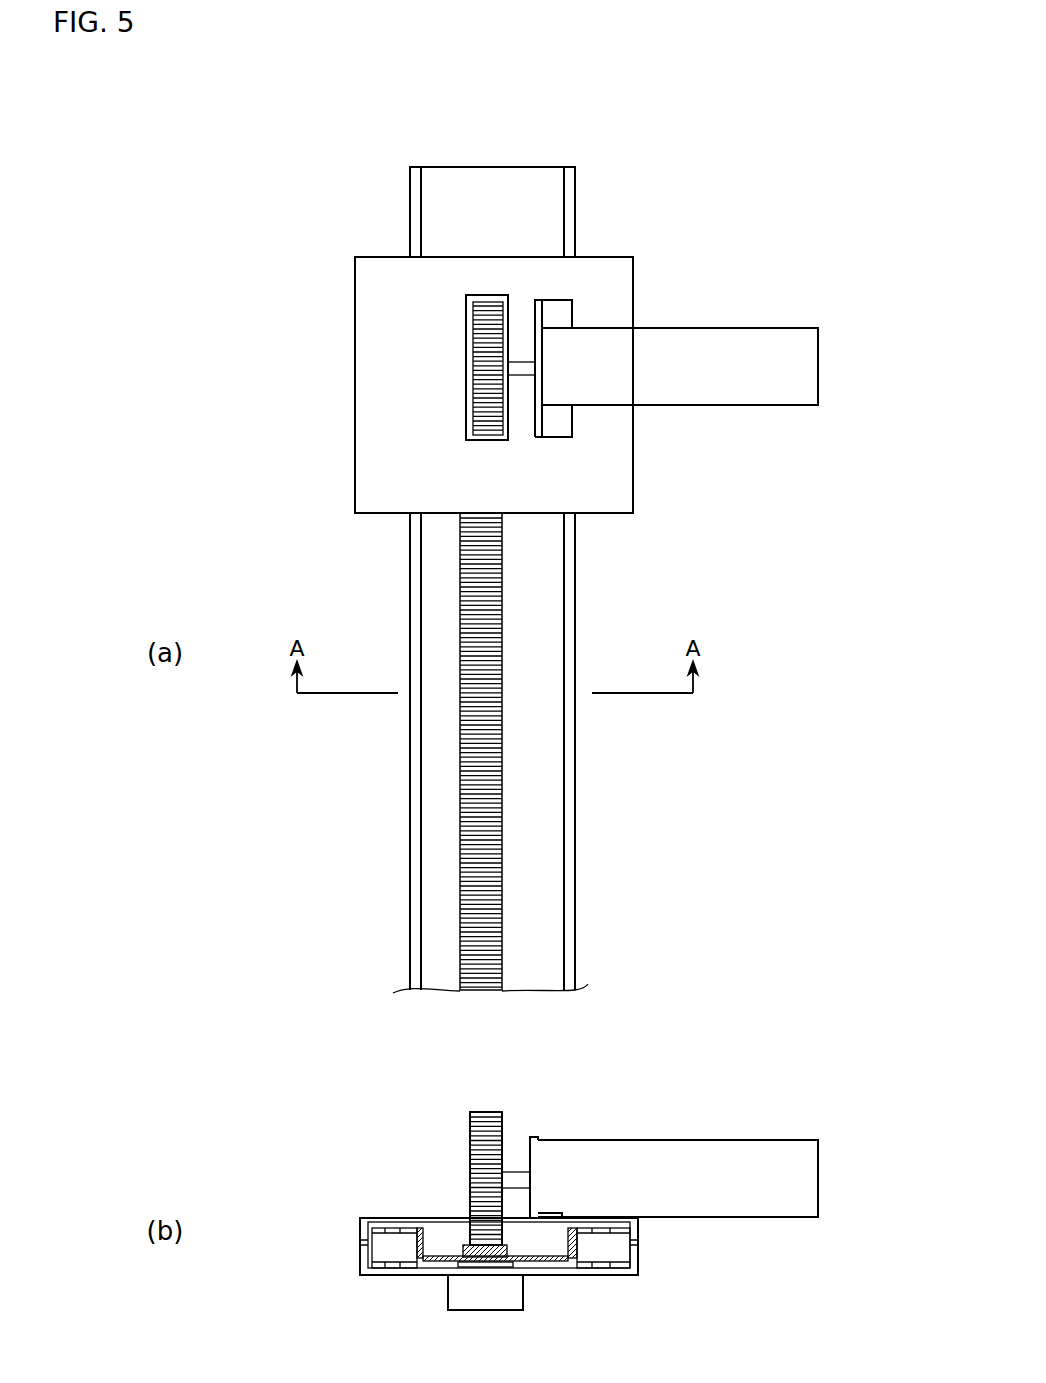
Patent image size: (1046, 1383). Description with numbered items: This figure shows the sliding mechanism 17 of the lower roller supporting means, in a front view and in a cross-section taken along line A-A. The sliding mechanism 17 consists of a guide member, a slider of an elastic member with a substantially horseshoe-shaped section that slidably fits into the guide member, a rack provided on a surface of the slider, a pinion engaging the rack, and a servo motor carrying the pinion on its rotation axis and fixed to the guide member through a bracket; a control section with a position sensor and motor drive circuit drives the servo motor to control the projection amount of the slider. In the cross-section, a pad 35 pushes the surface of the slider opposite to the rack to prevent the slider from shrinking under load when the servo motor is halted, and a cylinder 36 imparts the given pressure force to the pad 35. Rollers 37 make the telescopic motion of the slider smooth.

The sliding mechanism 17 is at (727, 275).
The pad 35 is at (507, 1265).
The cylinder 36 is at (498, 1308).
The roller 37 is at (390, 1257).